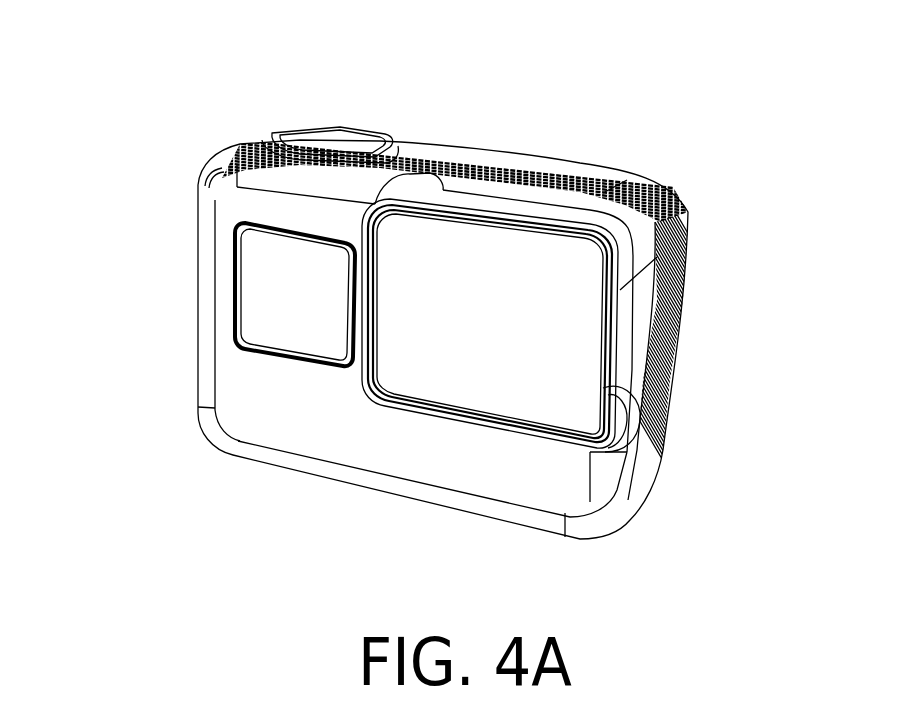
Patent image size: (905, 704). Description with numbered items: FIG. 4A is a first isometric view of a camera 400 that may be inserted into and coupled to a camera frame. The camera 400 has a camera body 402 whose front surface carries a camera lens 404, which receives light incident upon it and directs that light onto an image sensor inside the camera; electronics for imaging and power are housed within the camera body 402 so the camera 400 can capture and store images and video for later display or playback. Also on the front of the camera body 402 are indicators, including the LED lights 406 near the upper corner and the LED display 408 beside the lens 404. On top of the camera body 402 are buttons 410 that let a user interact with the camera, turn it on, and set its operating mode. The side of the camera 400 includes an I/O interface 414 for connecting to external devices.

The camera 400 is at (443, 288).
The camera body 402 is at (596, 148).
The camera lens 404 is at (575, 335).
The LED lights 406 is at (205, 170).
The LED display 408 is at (243, 298).
The buttons 410 is at (322, 118).
The I/O interface 414 is at (668, 435).